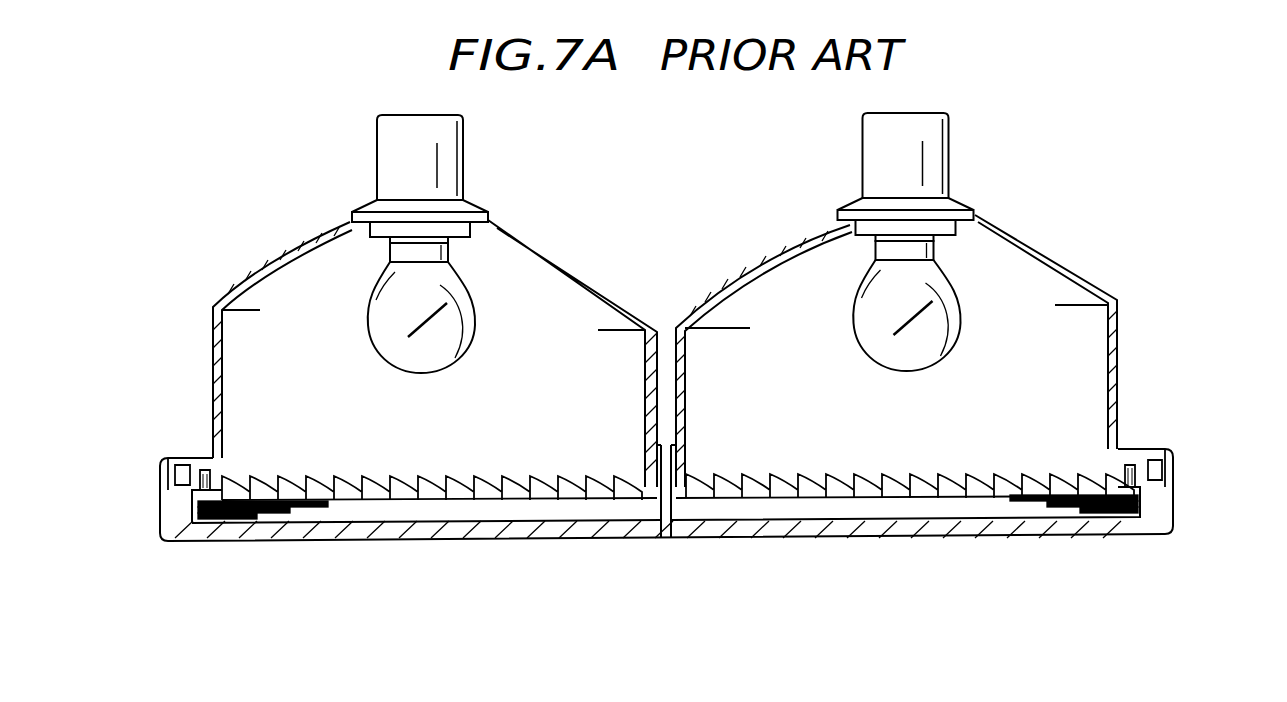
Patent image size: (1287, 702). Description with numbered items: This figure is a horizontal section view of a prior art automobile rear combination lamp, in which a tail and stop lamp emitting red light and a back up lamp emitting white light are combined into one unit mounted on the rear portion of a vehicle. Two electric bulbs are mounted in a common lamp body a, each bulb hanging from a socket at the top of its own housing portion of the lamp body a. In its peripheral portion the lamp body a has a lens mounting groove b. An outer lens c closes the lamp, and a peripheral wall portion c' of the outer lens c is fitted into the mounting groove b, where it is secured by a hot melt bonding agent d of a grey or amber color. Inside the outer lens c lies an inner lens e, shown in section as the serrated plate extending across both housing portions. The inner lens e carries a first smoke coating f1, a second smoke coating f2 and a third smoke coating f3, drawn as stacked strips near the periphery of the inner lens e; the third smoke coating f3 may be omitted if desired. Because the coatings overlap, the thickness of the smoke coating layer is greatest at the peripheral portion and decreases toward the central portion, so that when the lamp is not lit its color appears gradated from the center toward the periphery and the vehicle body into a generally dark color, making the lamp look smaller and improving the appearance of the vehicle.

The lamp body a is at (265, 267).
The lens mounting groove b is at (172, 498).
The outer lens c is at (648, 567).
The peripheral wall portion c' is at (671, 474).
The hot melt bonding agent d is at (173, 460).
The inner lens e is at (755, 501).
The first smoke coating f1 is at (323, 508).
The second smoke coating f2 is at (275, 513).
The third smoke coating f3 is at (237, 518).